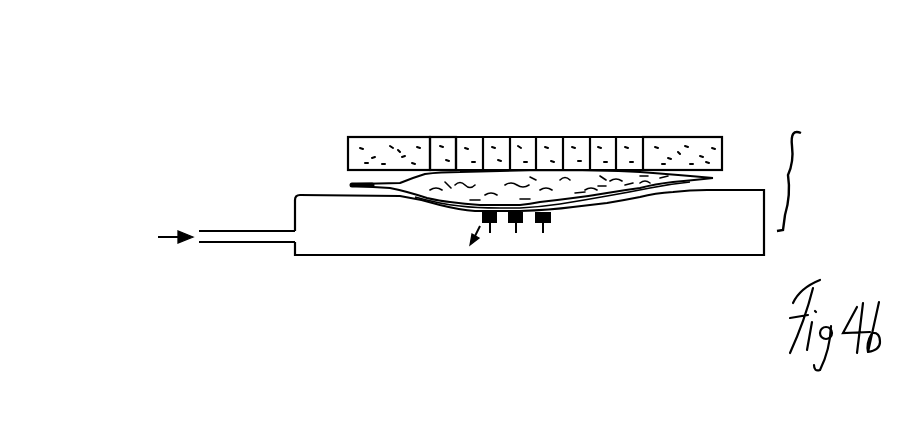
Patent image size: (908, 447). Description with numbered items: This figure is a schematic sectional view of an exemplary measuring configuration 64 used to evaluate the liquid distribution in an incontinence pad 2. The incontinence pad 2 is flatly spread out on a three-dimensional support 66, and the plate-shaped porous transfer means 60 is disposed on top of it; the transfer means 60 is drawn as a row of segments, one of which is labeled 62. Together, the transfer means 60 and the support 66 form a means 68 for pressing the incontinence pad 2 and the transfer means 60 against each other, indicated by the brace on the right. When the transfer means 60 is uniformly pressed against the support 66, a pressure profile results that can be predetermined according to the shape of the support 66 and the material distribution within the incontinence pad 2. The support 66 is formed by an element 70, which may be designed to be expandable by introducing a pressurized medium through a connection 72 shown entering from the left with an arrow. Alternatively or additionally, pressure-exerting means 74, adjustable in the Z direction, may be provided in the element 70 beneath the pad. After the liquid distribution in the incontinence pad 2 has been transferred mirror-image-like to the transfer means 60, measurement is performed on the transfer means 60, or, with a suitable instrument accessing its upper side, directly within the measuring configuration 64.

The incontinence pad 2 is at (472, 183).
The plate-shaped porous transfer means 60 is at (399, 130).
The heating element segment 62 is at (437, 137).
The measuring configuration 64 is at (767, 97).
The three-dimensional support 66 is at (597, 205).
The means for pressing 68 is at (804, 181).
The element forming the support 70 is at (378, 230).
The connection 72 is at (222, 235).
The pressure-exerting means 74 is at (512, 230).